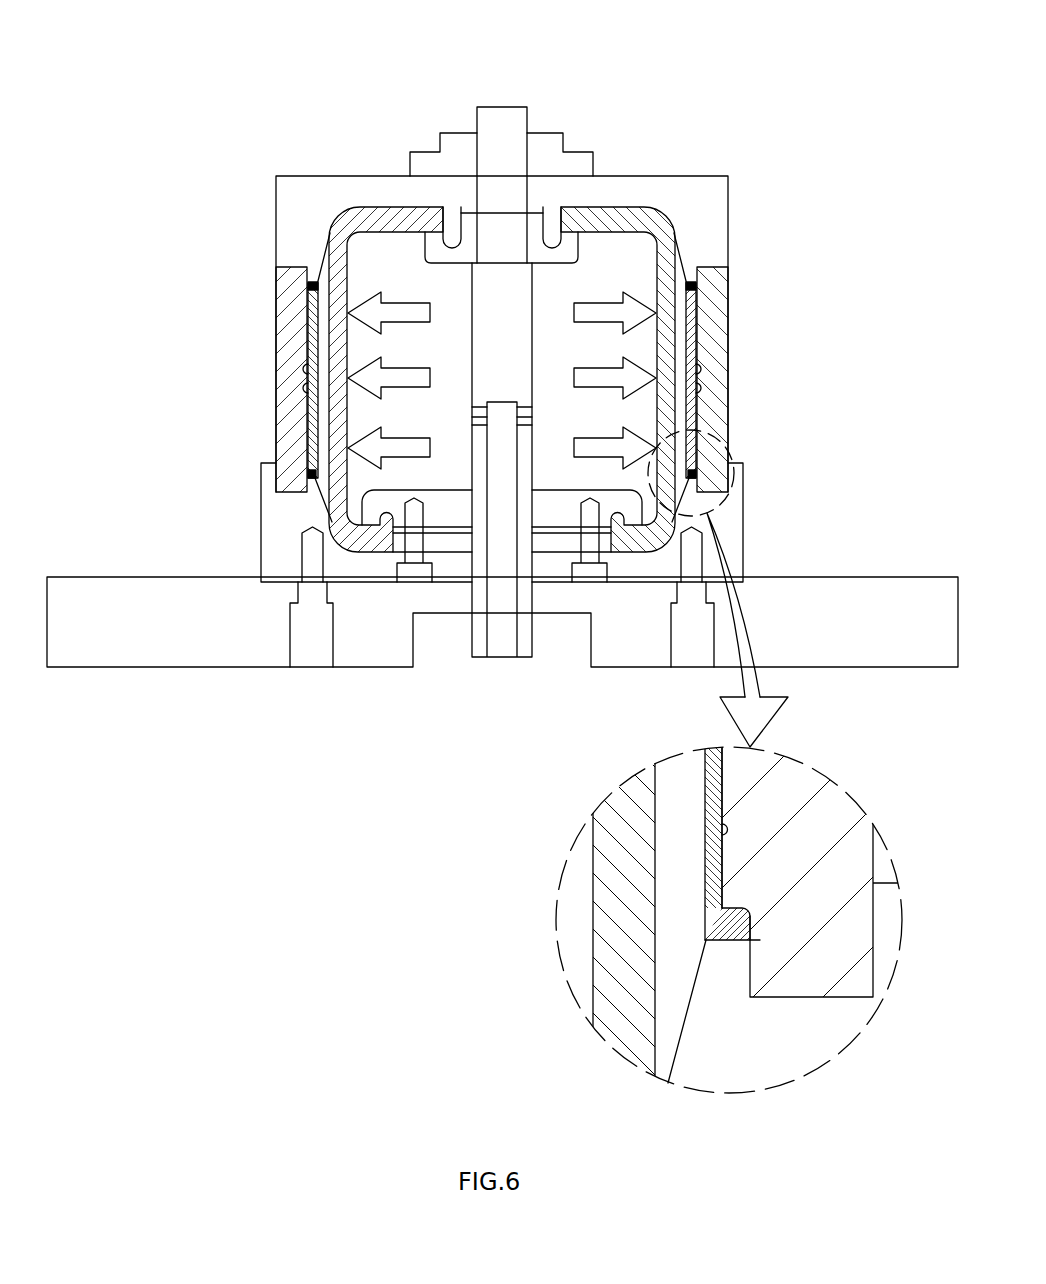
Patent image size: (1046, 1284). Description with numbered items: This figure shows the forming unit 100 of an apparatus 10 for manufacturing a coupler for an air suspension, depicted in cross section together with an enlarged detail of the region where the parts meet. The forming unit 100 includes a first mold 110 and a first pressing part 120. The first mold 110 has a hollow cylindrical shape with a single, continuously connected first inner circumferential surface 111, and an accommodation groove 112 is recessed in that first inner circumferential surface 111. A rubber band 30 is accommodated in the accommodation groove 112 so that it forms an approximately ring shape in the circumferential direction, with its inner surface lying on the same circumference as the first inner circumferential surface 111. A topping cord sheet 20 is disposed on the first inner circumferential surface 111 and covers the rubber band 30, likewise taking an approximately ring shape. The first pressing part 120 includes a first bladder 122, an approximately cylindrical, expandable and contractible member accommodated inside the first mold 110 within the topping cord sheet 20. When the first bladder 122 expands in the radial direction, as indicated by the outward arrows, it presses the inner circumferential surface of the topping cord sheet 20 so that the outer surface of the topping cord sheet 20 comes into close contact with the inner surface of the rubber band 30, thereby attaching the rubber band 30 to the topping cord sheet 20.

The apparatus 10 is at (299, 30).
The forming unit 100 is at (270, 297).
The first mold 110 is at (722, 412).
The first pressing part 120 is at (626, 205).
The first bladder 122 is at (655, 220).
The topping cord sheet 20 is at (705, 752).
The first inner circumferential surface 111 is at (713, 833).
The accommodation groove 112 is at (748, 932).
The rubber band 30 is at (730, 937).